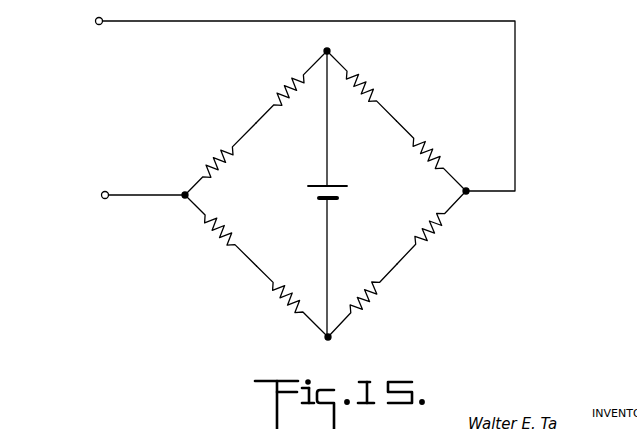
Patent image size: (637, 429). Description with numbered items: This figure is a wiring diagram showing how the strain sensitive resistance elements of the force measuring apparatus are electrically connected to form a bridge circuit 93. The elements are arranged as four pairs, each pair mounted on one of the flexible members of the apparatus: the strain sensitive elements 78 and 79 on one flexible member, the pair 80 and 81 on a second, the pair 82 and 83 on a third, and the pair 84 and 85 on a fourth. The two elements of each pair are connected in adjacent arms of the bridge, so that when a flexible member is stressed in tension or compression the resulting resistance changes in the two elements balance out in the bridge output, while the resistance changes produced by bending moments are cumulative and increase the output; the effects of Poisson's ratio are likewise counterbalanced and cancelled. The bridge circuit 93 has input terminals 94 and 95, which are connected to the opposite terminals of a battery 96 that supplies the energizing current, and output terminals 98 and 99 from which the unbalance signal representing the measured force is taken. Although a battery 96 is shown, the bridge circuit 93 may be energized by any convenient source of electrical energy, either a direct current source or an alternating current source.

The strain sensitive element 78 is at (370, 86).
The strain sensitive element 79 is at (205, 160).
The resistance element 80 is at (216, 234).
The resistance element 81 is at (371, 305).
The resistance element 82 is at (431, 243).
The resistance element 83 is at (278, 303).
The resistance element 84 is at (281, 85).
The resistance element 85 is at (432, 150).
The bridge circuit 93 is at (277, 198).
The input terminal 94 is at (331, 52).
The input terminal 95 is at (332, 341).
The battery 96 is at (340, 197).
The output terminal 98 is at (95, 21).
The output terminal 99 is at (102, 199).